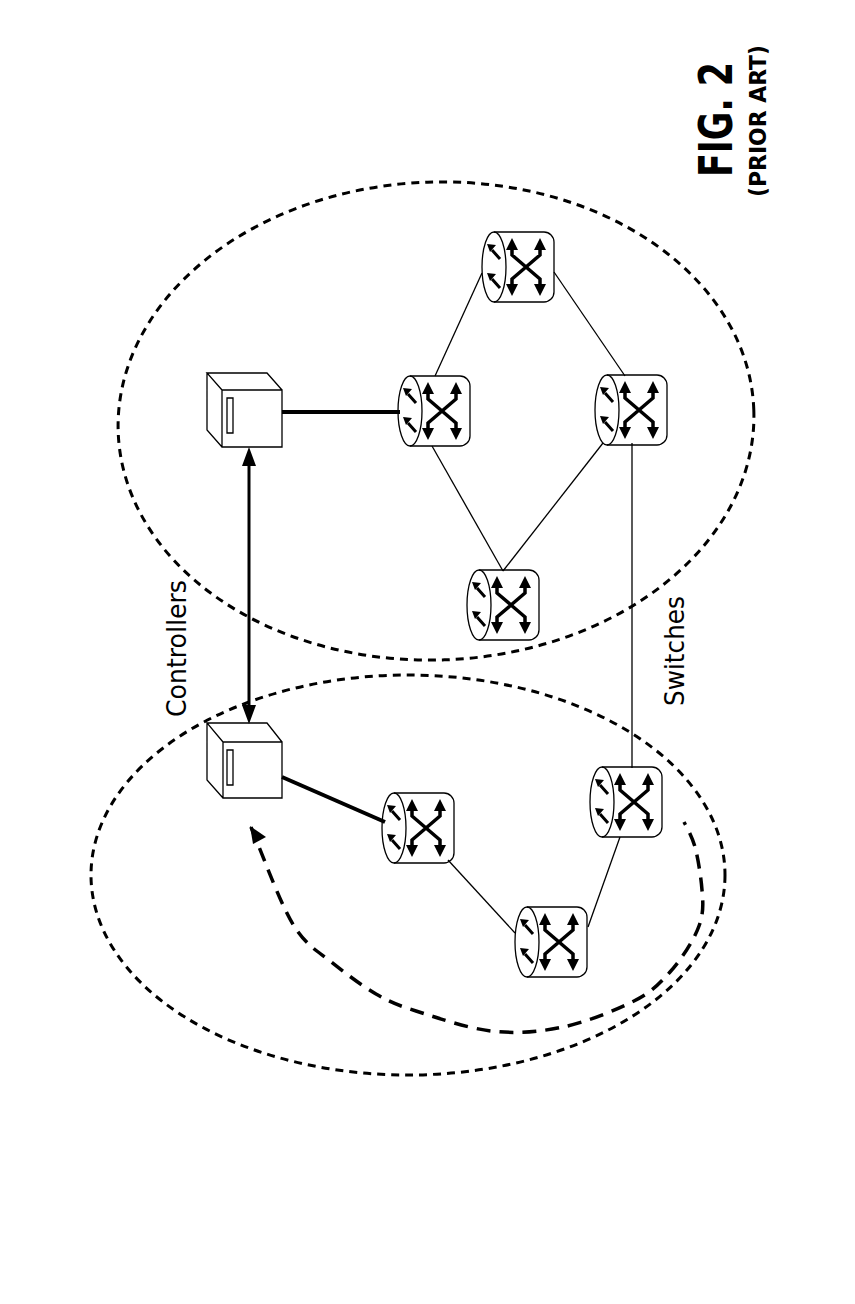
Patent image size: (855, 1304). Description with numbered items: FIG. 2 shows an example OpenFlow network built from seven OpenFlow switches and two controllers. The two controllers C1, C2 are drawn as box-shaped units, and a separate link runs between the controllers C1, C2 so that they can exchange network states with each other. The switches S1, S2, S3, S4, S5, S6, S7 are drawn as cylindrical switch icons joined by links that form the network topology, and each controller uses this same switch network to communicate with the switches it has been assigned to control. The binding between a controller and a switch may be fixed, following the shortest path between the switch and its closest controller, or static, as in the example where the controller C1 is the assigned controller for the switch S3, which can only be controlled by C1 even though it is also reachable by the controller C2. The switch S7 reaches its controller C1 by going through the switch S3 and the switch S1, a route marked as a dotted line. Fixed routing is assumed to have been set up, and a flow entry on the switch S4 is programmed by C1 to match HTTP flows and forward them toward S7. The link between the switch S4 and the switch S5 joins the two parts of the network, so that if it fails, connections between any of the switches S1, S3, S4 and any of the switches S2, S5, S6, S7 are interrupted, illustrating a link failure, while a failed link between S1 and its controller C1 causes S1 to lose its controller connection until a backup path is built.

The controller C1 is at (262, 760).
The controller C2 is at (263, 407).
The OpenFlow switch S1 is at (438, 828).
The OpenFlow switch S2 is at (455, 411).
The OpenFlow switch S3 is at (572, 942).
The OpenFlow switch S4 is at (647, 802).
The OpenFlow switch S5 is at (652, 410).
The OpenFlow switch S6 is at (539, 267).
The OpenFlow switch S7 is at (523, 605).